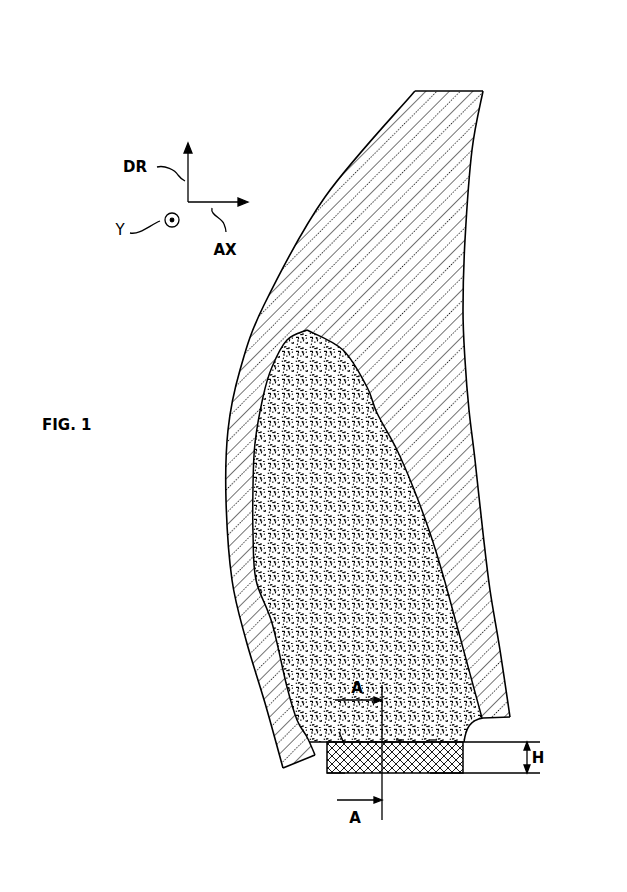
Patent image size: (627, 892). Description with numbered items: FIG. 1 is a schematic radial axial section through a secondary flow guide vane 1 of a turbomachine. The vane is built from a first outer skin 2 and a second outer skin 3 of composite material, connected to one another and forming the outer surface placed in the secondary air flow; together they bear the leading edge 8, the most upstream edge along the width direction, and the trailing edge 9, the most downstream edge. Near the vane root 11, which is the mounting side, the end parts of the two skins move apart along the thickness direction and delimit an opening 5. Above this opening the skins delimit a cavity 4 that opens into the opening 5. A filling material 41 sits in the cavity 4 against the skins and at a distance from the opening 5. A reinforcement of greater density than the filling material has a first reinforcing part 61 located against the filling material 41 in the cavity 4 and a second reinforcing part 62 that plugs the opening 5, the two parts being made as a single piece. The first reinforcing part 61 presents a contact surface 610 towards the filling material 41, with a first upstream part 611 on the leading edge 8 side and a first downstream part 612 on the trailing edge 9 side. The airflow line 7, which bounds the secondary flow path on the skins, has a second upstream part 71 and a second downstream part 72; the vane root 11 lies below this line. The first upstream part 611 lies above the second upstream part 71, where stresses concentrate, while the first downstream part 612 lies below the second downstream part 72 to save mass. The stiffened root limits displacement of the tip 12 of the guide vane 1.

The secondary flow guide vane 1 is at (150, 583).
The first outer skin 2 is at (482, 229).
The second outer skin 3 is at (447, 311).
The cavity 4 is at (318, 532).
The opening 5 is at (475, 728).
The airflow line 7 is at (433, 730).
The leading edge 8 is at (237, 387).
The trailing edge 9 is at (470, 413).
The vane root 11 is at (517, 707).
The tip 12 is at (447, 90).
The filling material 41 is at (310, 473).
The first reinforcing part 61 is at (300, 754).
The second reinforcing part 62 is at (411, 774).
The second upstream part of the airflow line 71 is at (336, 769).
The second downstream part of the airflow line 72 is at (484, 690).
The contact surface 610 is at (400, 733).
The first upstream part of the contact surface 611 is at (339, 732).
The first downstream part of the contact surface 612 is at (437, 777).